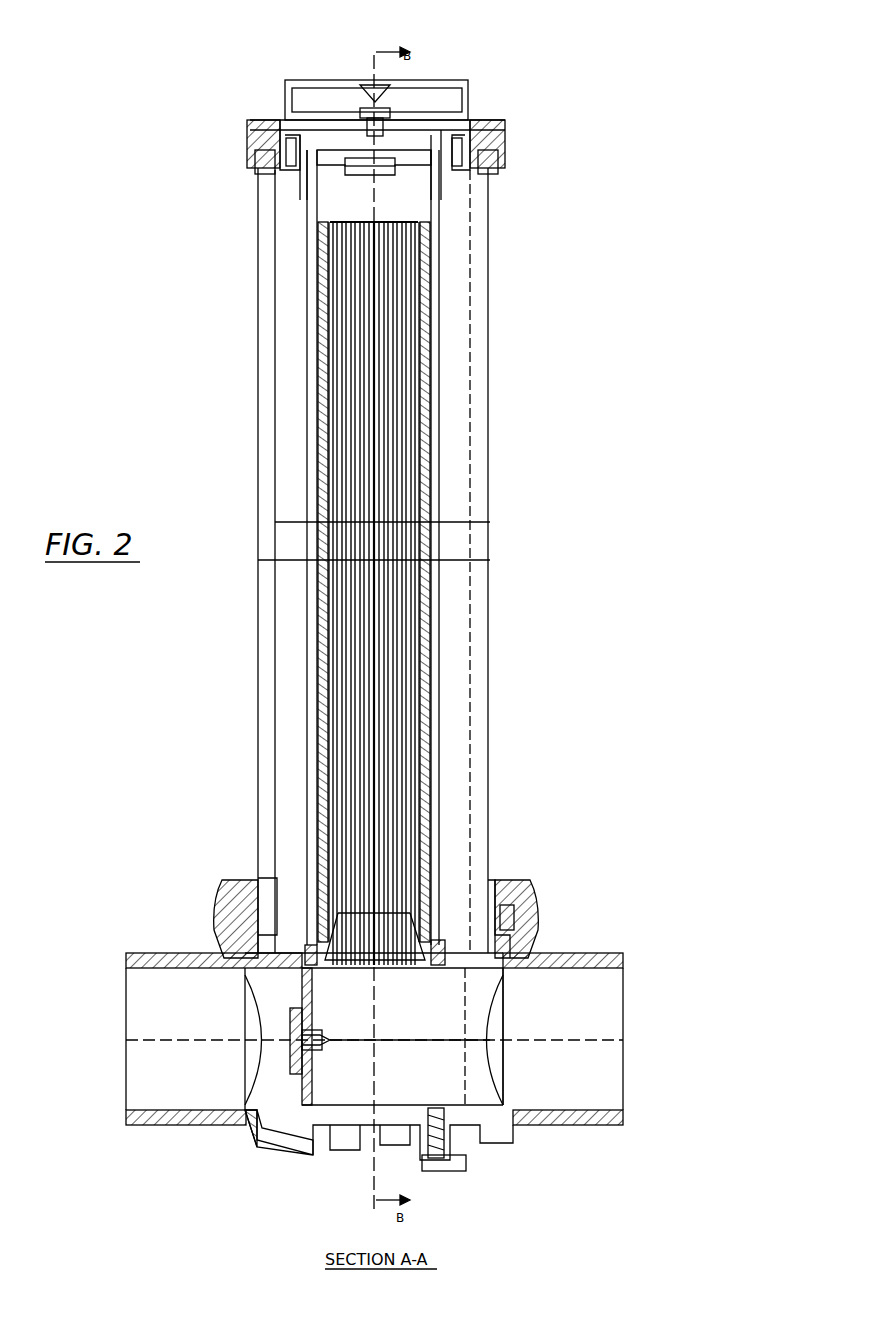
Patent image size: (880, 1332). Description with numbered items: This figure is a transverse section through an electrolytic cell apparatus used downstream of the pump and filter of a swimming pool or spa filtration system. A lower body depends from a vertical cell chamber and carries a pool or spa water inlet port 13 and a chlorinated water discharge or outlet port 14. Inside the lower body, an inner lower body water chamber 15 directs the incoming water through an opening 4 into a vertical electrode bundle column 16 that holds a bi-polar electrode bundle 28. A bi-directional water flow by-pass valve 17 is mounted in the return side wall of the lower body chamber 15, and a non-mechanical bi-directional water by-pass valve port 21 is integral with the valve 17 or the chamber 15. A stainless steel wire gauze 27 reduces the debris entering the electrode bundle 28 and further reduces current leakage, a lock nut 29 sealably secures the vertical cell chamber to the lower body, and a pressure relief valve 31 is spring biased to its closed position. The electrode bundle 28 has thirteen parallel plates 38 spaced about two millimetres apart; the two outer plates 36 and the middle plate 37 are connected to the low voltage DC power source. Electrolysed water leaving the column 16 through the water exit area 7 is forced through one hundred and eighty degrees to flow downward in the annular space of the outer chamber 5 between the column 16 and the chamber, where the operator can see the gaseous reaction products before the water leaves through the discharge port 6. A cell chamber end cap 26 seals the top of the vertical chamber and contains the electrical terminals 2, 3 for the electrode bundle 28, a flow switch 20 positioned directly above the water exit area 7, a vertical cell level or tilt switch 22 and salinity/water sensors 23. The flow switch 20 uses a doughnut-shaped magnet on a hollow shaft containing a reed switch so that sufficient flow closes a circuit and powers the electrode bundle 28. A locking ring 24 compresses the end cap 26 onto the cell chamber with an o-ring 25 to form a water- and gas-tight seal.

The electrical terminal 2 is at (288, 126).
The electrical terminal 3 is at (437, 162).
The opening 4 is at (332, 945).
The outer chamber 5 is at (452, 410).
The discharge port 6 is at (262, 946).
The water exit area 7 is at (348, 190).
The water inlet port 13 is at (615, 1090).
The water discharge or outlet port 14 is at (130, 1086).
The inner lower body water chamber 15 is at (345, 1092).
The vertical electrode bundle column 16 is at (312, 340).
The bi-directional water flow by-pass valve 17 is at (300, 1048).
The flow switch 20 is at (443, 192).
The bi-directional water by-pass valve port 21 is at (250, 1140).
The vertical cell level or tilt switch 22 is at (392, 100).
The salinity/water sensors 23 is at (465, 132).
The locking ring 24 is at (506, 134).
The o-ring 25 is at (498, 160).
The cell chamber end cap 26 is at (455, 86).
The stainless steel wire gauze 27 is at (428, 892).
The bi-polar electrode bundle 28 is at (382, 488).
The lock nut 29 is at (532, 927).
The pressure relief valve 31 is at (460, 1173).
The outer plates 36 is at (425, 265).
The middle plate 37 is at (382, 826).
The electrode plates 38 is at (334, 690).